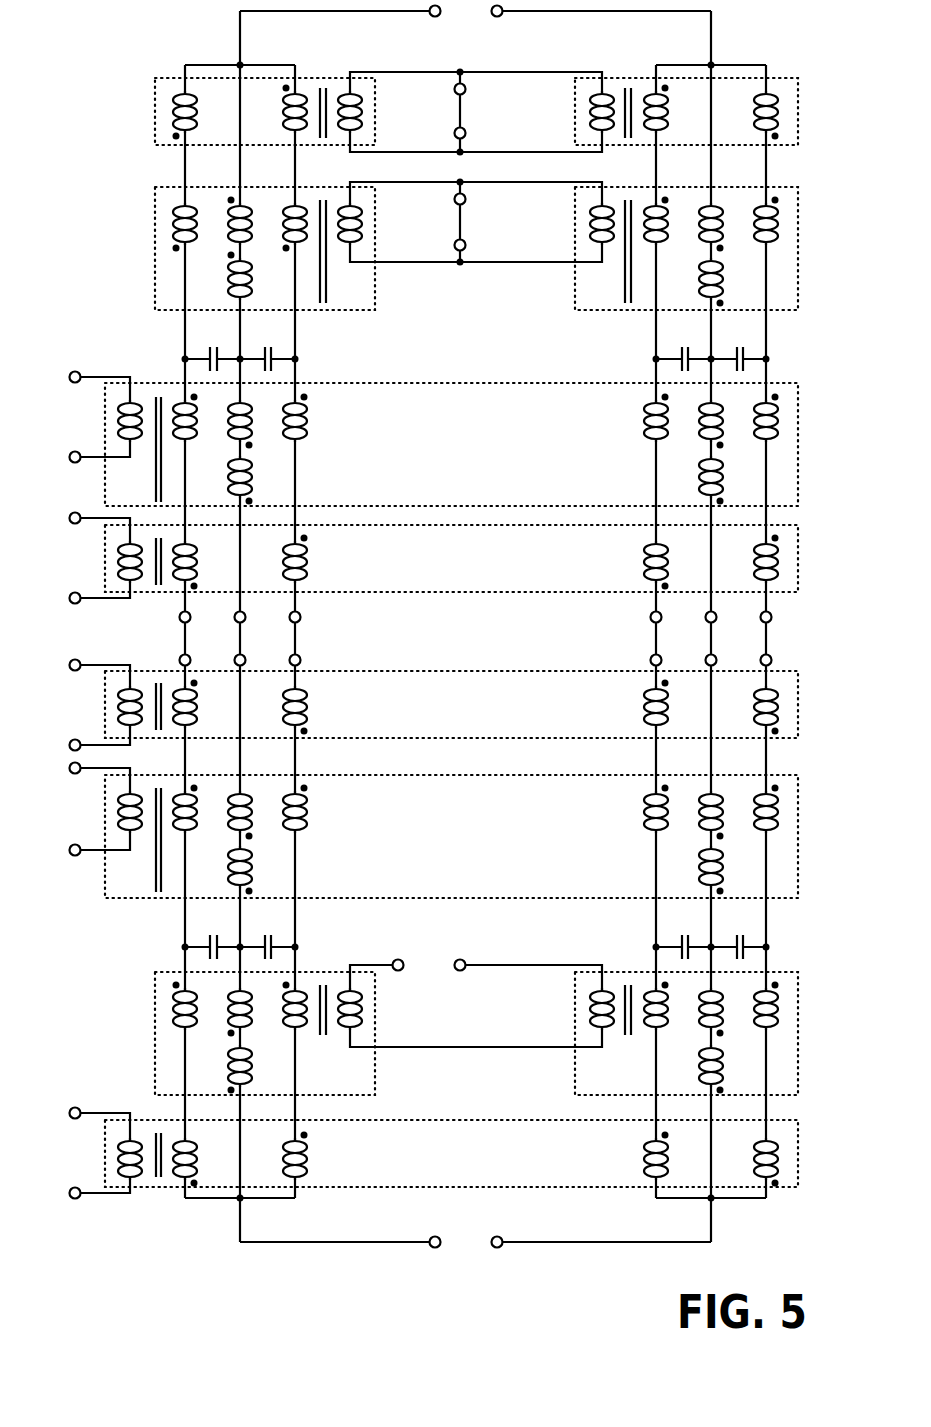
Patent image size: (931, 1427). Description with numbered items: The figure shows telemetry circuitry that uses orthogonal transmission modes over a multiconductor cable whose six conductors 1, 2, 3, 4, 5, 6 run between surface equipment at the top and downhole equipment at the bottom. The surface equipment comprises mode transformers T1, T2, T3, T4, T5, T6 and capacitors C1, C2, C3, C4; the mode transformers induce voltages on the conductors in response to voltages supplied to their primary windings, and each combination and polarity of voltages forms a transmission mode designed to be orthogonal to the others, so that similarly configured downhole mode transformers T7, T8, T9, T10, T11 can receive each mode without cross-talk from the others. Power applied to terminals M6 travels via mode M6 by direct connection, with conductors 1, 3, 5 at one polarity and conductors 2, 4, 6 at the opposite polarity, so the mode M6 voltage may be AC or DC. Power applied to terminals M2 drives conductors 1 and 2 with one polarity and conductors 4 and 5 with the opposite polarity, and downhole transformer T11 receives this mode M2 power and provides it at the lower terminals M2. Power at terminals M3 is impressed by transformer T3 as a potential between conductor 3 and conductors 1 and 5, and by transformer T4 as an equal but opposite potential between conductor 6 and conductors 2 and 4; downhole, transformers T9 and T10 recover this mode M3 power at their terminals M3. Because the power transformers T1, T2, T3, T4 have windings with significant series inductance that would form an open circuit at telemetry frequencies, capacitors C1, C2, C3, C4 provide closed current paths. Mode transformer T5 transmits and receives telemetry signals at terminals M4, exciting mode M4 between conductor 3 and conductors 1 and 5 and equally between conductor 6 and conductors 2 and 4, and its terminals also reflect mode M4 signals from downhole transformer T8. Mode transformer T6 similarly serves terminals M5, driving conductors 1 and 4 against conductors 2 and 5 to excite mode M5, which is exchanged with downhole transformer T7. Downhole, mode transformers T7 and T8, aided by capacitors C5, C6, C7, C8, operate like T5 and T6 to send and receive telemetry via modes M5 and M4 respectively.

The mode transformer T1 is at (153, 133).
The mode transformer T2 is at (798, 133).
The mode transformer T3 is at (153, 245).
The mode transformer T4 is at (798, 242).
The mode transformer T5 is at (800, 440).
The mode transformer T6 is at (800, 575).
The mode transformer T7 is at (800, 730).
The mode transformer T8 is at (800, 833).
The transformer T9 is at (152, 1014).
The transformer T10 is at (800, 1015).
The transformer T11 is at (800, 1175).
The capacitor C1 is at (213, 347).
The capacitor C2 is at (269, 347).
The capacitor C3 is at (684, 347).
The capacitor C4 is at (740, 347).
The capacitor C5 is at (213, 935).
The capacitor C6 is at (269, 935).
The capacitor C7 is at (684, 935).
The capacitor C8 is at (740, 935).
The terminals M2 is at (327, 634).
The terminals M3 is at (476, 613).
The terminals M4 is at (106, 632).
The terminals M5 is at (106, 632).
The terminals M6 is at (466, 629).
The conductor 1 is at (184, 639).
The conductor 2 is at (765, 639).
The conductor 3 is at (239, 639).
The conductor 4 is at (655, 639).
The conductor 5 is at (294, 639).
The conductor 6 is at (710, 639).